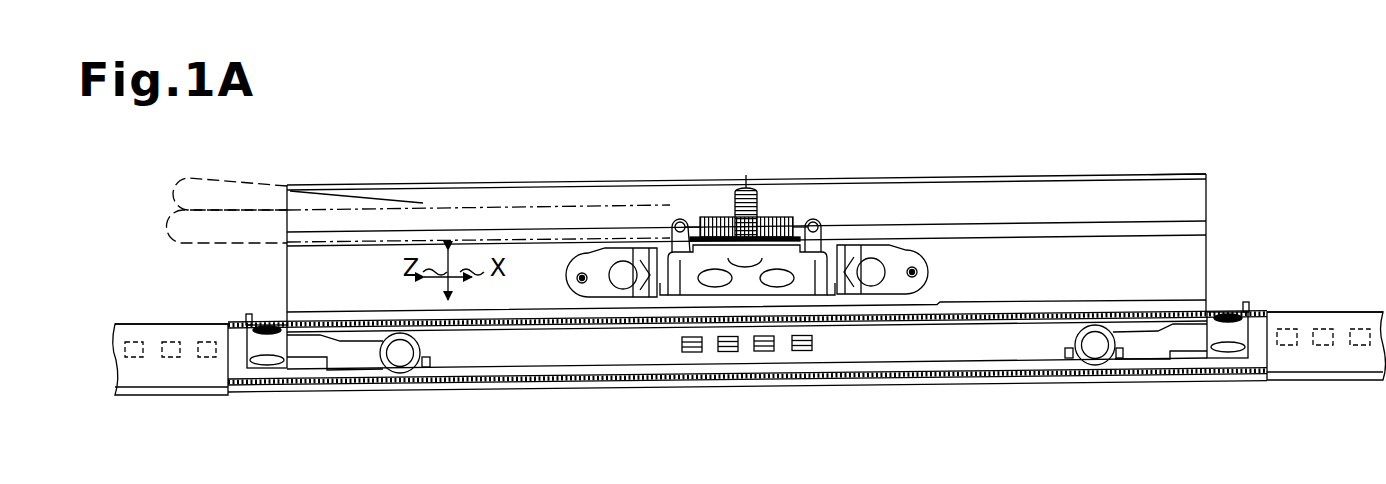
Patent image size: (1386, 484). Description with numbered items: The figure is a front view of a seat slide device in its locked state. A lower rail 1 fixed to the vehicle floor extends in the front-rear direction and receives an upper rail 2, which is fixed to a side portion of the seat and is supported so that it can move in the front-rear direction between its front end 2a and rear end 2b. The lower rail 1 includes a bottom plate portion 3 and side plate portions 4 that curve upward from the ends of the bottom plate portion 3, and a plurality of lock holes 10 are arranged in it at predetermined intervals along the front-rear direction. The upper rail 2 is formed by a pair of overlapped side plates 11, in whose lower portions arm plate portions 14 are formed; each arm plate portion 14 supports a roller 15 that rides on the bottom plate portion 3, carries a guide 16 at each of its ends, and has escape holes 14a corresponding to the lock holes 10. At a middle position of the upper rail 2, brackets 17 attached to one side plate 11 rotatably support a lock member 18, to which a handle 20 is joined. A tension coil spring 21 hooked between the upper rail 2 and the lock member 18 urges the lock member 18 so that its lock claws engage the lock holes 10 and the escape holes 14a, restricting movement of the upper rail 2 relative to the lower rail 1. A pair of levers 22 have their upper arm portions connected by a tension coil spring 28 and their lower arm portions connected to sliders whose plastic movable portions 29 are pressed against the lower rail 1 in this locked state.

The lower rail 1 is at (766, 390).
The upper rail 2 is at (814, 183).
The front end 2a is at (288, 184).
The rear end 2b is at (1207, 174).
The bottom plate portion 3 is at (398, 375).
The side plate portion 4 is at (155, 378).
The lock hole 10 is at (172, 340).
The side plate 11 is at (1196, 262).
The arm plate portion 14 is at (653, 348).
The escape hole 14a is at (801, 351).
The roller 15 is at (424, 351).
The guide 16 is at (313, 352).
The bracket 17 is at (597, 265).
The lock member 18 is at (690, 284).
The handle 20 is at (246, 178).
The tension coil spring 21 is at (757, 200).
The lever 22 is at (678, 219).
The tension coil spring 28 is at (722, 216).
The movable portion 29 is at (267, 345).